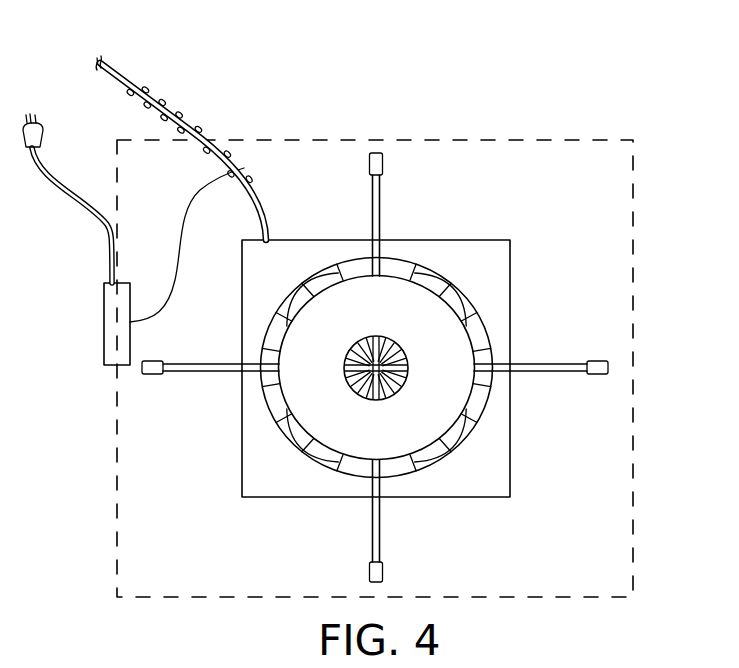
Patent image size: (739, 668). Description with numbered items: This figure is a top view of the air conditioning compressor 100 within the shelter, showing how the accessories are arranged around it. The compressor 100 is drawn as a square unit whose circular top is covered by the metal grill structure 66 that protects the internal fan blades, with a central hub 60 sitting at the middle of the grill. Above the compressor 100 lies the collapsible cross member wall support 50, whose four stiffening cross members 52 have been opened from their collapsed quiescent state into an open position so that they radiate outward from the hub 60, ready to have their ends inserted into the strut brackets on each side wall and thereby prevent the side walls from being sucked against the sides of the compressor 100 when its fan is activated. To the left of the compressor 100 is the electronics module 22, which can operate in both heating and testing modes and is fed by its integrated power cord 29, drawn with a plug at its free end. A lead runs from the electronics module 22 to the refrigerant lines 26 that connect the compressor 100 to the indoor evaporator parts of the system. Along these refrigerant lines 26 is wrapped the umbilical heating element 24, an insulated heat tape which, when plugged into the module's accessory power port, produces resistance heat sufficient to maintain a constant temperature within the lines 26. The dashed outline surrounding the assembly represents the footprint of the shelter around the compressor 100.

The electronics module 22 is at (104, 325).
The umbilical heating element 24 is at (152, 92).
The refrigerant lines 26 is at (108, 60).
The integrated power cord 29 is at (65, 183).
The collapsible cross member wall support 50 is at (553, 341).
The stiffening cross members 52 is at (197, 364).
The hub 60 is at (417, 431).
The metal grill structure 66 is at (265, 409).
The compressor 100 is at (502, 481).